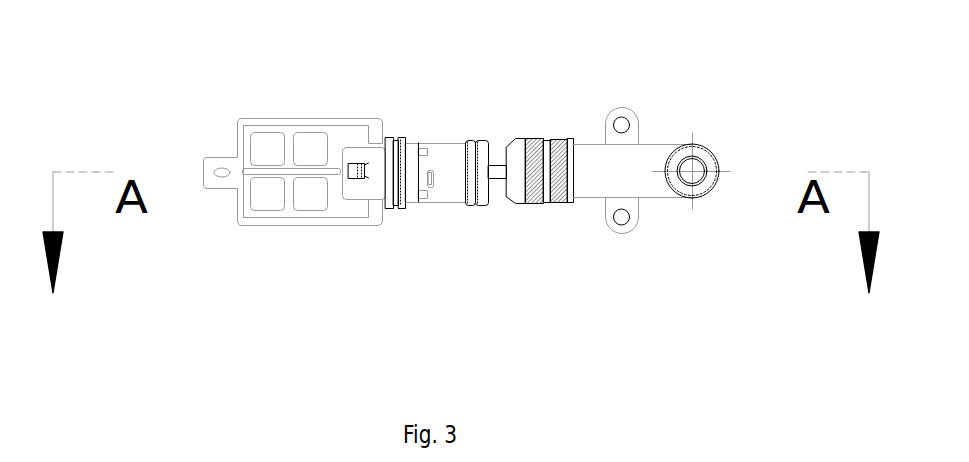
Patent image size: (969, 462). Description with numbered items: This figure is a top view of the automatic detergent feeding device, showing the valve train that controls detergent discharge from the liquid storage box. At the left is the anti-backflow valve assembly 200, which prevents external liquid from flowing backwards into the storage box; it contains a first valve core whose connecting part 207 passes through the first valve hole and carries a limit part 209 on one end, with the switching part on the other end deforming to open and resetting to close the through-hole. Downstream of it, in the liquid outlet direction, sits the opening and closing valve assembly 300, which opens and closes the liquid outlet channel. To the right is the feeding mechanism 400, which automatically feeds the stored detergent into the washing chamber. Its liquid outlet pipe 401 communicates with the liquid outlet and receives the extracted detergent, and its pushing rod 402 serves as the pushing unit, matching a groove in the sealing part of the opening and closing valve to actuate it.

The anti-backflow valve assembly 200 is at (368, 162).
The connecting part 207 is at (345, 187).
The limit part 209 is at (368, 187).
The opening and closing valve assembly 300 is at (443, 167).
The liquid outlet pipe 401 is at (520, 160).
The pushing rod 402 is at (498, 170).
The feeding mechanism 400 is at (665, 213).